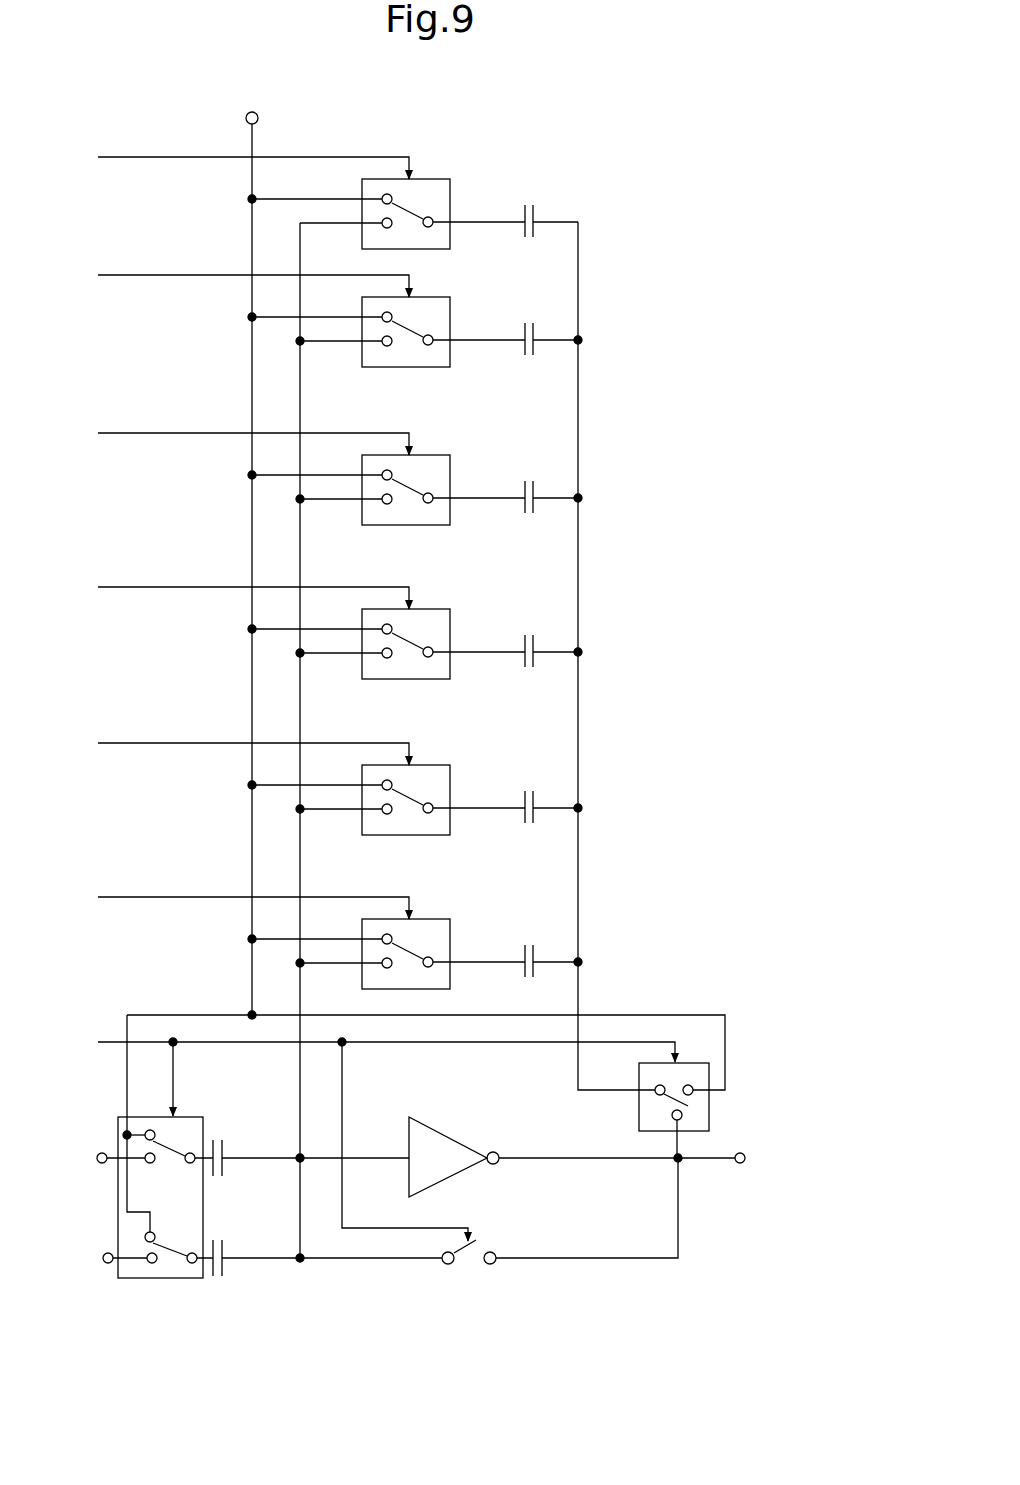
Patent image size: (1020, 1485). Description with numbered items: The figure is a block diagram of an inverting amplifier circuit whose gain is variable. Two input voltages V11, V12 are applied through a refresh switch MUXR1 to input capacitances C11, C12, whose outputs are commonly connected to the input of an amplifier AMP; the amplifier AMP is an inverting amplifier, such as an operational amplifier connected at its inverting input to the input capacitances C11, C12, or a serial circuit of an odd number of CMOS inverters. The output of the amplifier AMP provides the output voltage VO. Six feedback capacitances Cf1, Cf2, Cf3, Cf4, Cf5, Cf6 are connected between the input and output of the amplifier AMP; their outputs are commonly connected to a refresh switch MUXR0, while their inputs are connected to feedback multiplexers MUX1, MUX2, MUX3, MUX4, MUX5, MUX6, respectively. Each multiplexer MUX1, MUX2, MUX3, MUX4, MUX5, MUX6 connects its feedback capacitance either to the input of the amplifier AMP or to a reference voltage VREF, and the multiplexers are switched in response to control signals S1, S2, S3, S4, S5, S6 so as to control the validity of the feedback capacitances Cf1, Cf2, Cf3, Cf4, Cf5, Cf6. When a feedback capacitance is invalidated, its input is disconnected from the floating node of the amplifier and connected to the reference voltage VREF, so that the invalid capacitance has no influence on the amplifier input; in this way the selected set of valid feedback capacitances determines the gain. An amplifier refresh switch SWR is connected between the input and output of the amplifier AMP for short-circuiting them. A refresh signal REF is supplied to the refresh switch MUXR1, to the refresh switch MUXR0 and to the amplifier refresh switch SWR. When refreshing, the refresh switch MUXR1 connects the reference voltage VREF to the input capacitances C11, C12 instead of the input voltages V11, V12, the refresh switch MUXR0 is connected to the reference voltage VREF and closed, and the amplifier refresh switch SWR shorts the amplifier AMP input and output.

The reference voltage VREF is at (257, 546).
The control signal S1 is at (235, 160).
The control signal S2 is at (235, 278).
The control signal S3 is at (235, 436).
The control signal S4 is at (235, 590).
The control signal S5 is at (235, 746).
The control signal S6 is at (235, 900).
The feedback multiplexer MUX1 is at (452, 192).
The feedback multiplexer MUX2 is at (452, 310).
The feedback multiplexer MUX3 is at (452, 468).
The feedback multiplexer MUX4 is at (452, 622).
The feedback multiplexer MUX5 is at (452, 778).
The feedback multiplexer MUX6 is at (452, 932).
The feedback capacitance Cf1 is at (535, 205).
The feedback capacitance Cf2 is at (535, 323).
The feedback capacitance Cf3 is at (535, 481).
The feedback capacitance Cf4 is at (535, 635).
The feedback capacitance Cf5 is at (535, 791).
The feedback capacitance Cf6 is at (535, 945).
The refresh control signal REF is at (379, 1128).
The refresh switch MUXR1 is at (145, 1278).
The refresh switch MUXR0 is at (709, 1108).
The input voltage V11 is at (89, 1158).
The input voltage V12 is at (90, 1258).
The input capacitance C11 is at (224, 1172).
The input capacitance C12 is at (224, 1267).
The amplifier AMP is at (442, 1128).
The amplifier refresh switch SWR is at (485, 1240).
The output voltage VO is at (765, 1158).